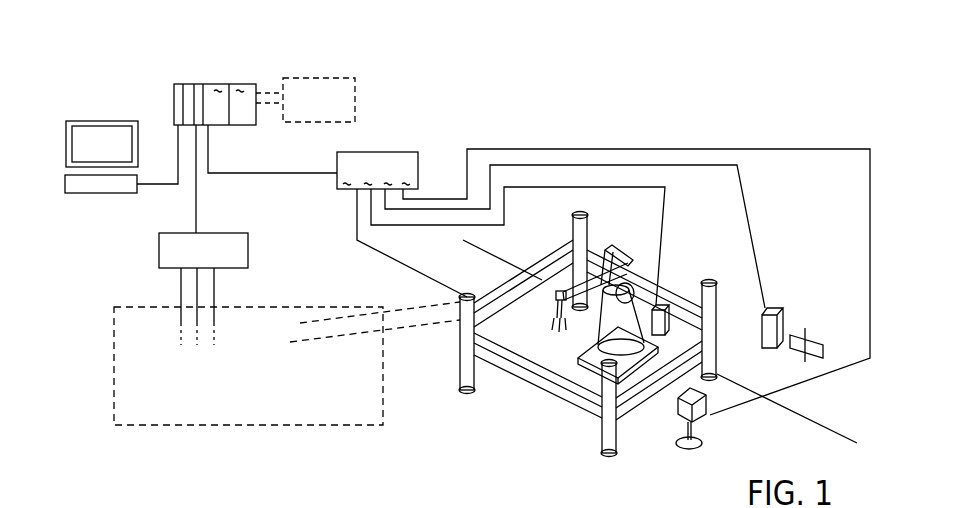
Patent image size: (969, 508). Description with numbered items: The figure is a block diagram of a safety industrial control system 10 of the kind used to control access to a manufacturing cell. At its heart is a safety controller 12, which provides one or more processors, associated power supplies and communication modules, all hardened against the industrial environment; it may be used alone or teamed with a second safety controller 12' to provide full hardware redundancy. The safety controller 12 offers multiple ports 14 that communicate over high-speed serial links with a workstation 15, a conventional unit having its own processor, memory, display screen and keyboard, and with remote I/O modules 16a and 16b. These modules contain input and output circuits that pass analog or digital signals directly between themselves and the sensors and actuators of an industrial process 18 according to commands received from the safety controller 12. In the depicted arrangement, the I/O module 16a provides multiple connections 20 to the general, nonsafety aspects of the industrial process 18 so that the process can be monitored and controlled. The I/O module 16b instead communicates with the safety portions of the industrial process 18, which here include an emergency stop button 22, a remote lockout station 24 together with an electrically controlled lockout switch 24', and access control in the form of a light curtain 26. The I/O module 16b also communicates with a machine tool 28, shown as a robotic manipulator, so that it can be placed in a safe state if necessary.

The safety industrial control system 10 is at (590, 41).
The safety controller 12 is at (215, 81).
The second safety controller 12' is at (307, 77).
The ports 14 is at (219, 134).
The workstation 15 is at (93, 98).
The remote I/O module 16a is at (248, 251).
The remote I/O module 16b is at (390, 152).
The industrial process 18 is at (420, 443).
The connections 20 is at (214, 308).
The emergency stop button 22 is at (680, 408).
The remote lockout station 24 is at (796, 311).
The electrically controlled lockout switch 24' is at (690, 278).
The light curtain 26 is at (586, 213).
The machine tool 28 is at (568, 245).